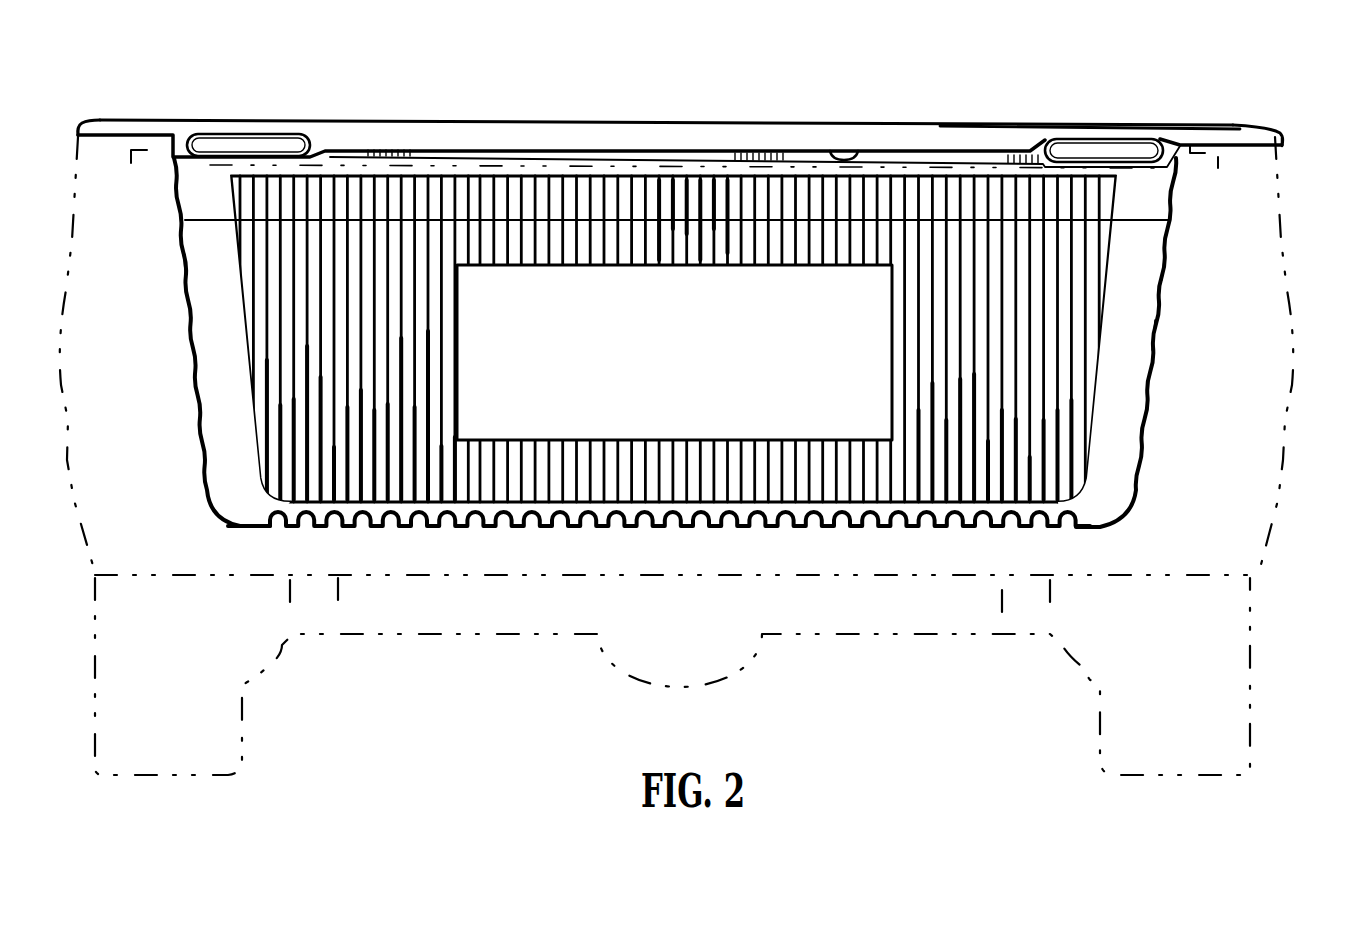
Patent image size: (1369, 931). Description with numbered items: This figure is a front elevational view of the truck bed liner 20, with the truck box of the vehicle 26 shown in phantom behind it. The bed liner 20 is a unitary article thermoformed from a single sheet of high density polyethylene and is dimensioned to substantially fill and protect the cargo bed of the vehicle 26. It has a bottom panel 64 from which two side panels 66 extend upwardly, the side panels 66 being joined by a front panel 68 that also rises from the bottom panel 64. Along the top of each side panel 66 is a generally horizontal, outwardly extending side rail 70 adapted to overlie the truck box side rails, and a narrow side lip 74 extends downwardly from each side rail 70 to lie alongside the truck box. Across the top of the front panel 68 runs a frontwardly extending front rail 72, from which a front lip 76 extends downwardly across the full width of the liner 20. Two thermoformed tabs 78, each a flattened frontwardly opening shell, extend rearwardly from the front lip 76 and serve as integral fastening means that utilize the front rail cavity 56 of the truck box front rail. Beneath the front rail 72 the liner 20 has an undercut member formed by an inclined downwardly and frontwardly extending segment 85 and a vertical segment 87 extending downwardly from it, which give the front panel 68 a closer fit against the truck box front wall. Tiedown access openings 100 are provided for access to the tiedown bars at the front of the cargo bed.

The truck bed liner 20 is at (1100, 106).
The vehicle 26 is at (1284, 228).
The front rail cavity 56 is at (190, 194).
The bottom panel 64 is at (1098, 529).
The side panels 66 is at (198, 392).
The front panel 68 is at (614, 370).
The side rails 70 is at (109, 120).
The front rail 72 is at (626, 120).
The side lips 74 is at (77, 130).
The front lip 76 is at (850, 151).
The tabs 78 is at (318, 153).
The inclined downwardly and frontwardly extending segment 85 is at (1177, 203).
The vertical segment 87 is at (1158, 335).
The tiedown access openings 100 is at (187, 262).